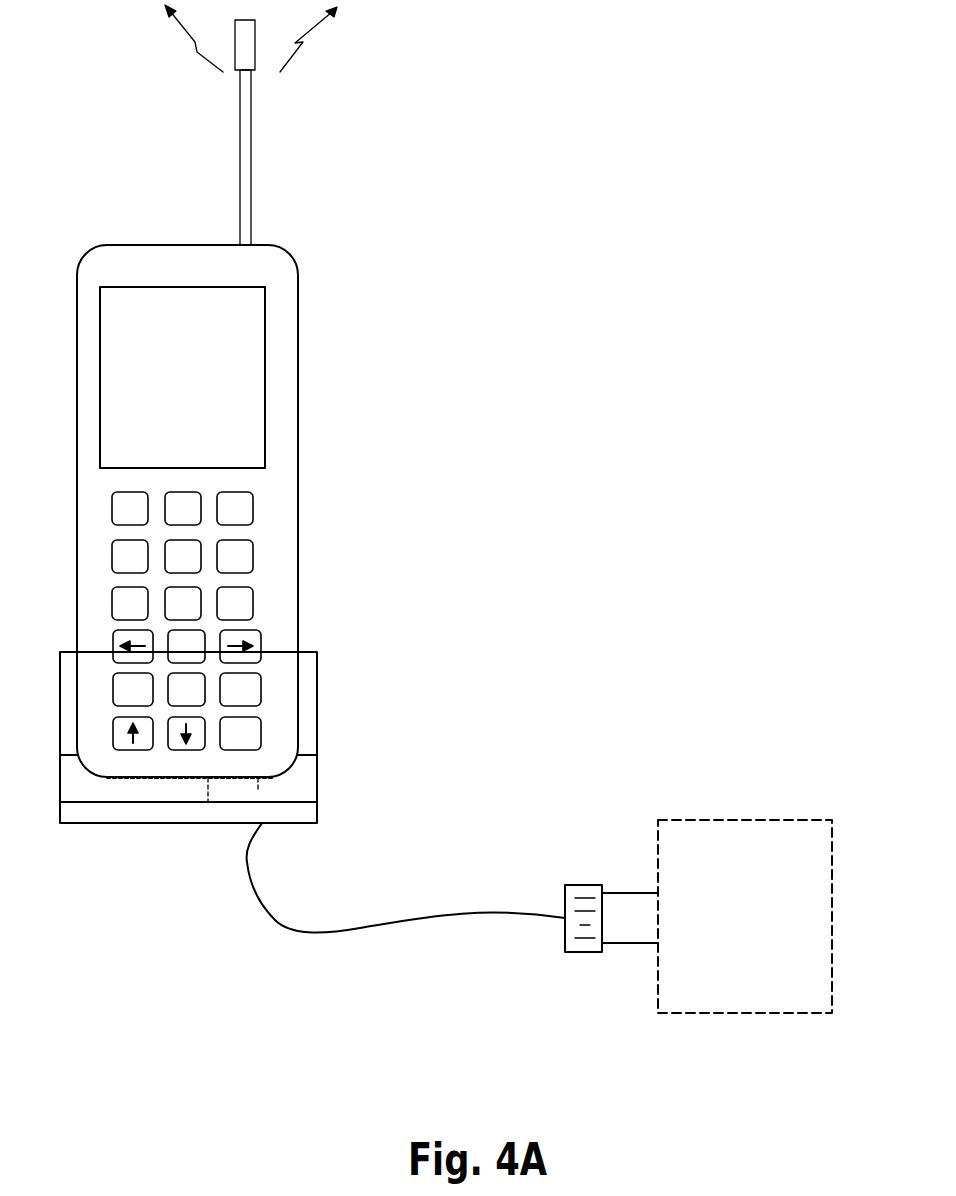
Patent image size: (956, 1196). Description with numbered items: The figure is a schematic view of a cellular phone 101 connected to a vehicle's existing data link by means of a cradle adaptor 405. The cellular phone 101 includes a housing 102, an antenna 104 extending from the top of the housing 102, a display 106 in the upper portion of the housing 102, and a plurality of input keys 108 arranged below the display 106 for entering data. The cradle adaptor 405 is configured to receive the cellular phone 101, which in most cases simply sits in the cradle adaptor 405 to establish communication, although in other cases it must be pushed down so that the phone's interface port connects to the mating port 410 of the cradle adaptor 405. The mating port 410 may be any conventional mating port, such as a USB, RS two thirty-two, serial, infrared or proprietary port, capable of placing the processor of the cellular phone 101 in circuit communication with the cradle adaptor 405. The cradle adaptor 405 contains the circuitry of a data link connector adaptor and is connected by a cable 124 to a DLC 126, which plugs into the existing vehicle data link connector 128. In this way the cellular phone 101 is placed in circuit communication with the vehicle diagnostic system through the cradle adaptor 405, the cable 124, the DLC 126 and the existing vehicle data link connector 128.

The cellular phone 101 is at (322, 350).
The housing 102 is at (298, 477).
The antenna 104 is at (251, 152).
The display 106 is at (265, 413).
The plurality of input keys 108 is at (255, 552).
The cradle adaptor 405 is at (317, 737).
The mating port 410 is at (258, 790).
The cable 124 is at (250, 887).
The DLC 126 is at (578, 885).
The existing vehicle data link connector 128 is at (658, 980).